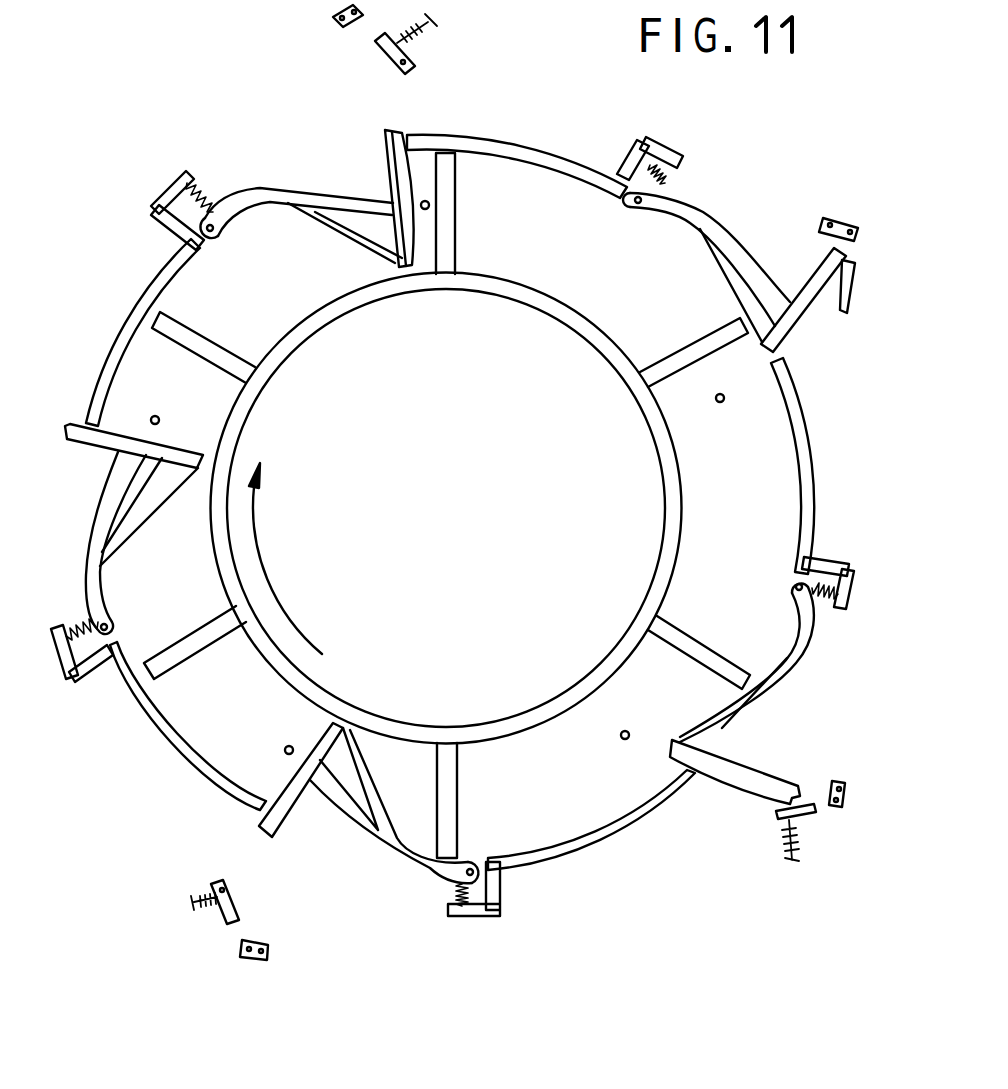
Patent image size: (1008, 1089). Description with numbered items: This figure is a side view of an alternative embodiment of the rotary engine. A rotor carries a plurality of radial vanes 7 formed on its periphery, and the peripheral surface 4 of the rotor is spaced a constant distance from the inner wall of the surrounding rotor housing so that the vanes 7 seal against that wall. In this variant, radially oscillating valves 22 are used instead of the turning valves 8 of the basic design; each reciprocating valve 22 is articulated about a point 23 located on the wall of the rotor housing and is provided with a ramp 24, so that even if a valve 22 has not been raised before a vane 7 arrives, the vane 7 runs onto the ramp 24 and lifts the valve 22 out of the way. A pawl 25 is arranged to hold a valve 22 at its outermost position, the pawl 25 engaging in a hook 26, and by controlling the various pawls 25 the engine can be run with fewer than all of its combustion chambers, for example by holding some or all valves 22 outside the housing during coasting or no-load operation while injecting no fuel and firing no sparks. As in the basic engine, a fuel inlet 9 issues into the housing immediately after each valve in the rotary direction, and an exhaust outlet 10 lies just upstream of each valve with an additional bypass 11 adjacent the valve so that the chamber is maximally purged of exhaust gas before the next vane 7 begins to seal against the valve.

The peripheral surface 4 is at (370, 308).
The radial vanes 7 is at (182, 648).
The turning valves 8 is at (237, 906).
The fuel inlet 9 is at (190, 900).
The exhaust outlet 10 is at (502, 893).
The additional bypass 11 is at (722, 402).
The radially oscillating valves 22 is at (107, 458).
The point 23 is at (102, 653).
The ramp 24 is at (140, 523).
The pawl 25 is at (852, 300).
The hook 26 is at (415, 128).